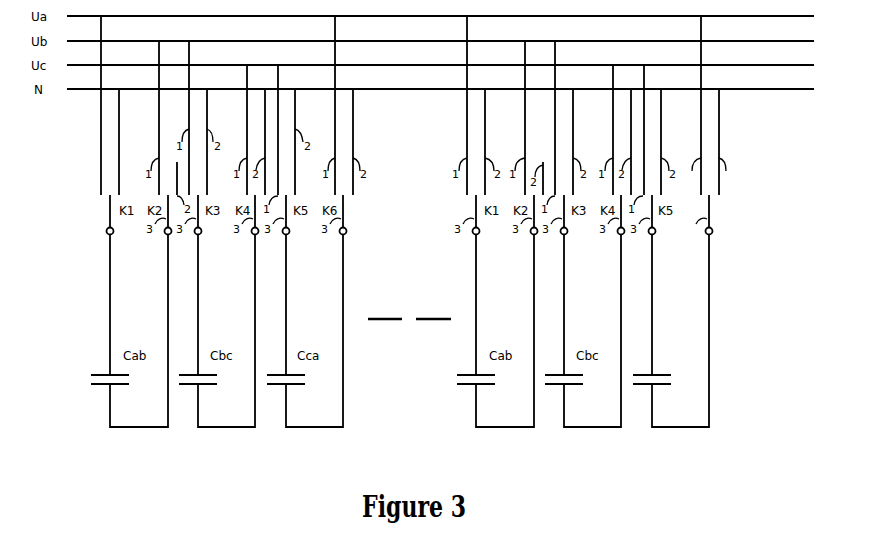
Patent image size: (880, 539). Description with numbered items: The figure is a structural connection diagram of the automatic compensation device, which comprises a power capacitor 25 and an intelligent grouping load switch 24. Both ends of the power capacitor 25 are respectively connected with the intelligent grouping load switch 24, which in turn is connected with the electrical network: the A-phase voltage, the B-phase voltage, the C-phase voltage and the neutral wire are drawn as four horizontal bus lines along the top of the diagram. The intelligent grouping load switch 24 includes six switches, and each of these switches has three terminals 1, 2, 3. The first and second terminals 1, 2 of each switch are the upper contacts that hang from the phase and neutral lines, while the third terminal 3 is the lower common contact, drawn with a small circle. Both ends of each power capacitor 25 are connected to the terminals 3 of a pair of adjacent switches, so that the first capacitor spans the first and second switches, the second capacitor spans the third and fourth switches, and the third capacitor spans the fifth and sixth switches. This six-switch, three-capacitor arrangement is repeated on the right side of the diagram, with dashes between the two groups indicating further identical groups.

The terminal 1 is at (101, 158).
The terminal 2 is at (119, 158).
The terminal 3 is at (108, 219).
The intelligent grouping load switch 24 is at (714, 212).
The power capacitor 25 is at (678, 375).